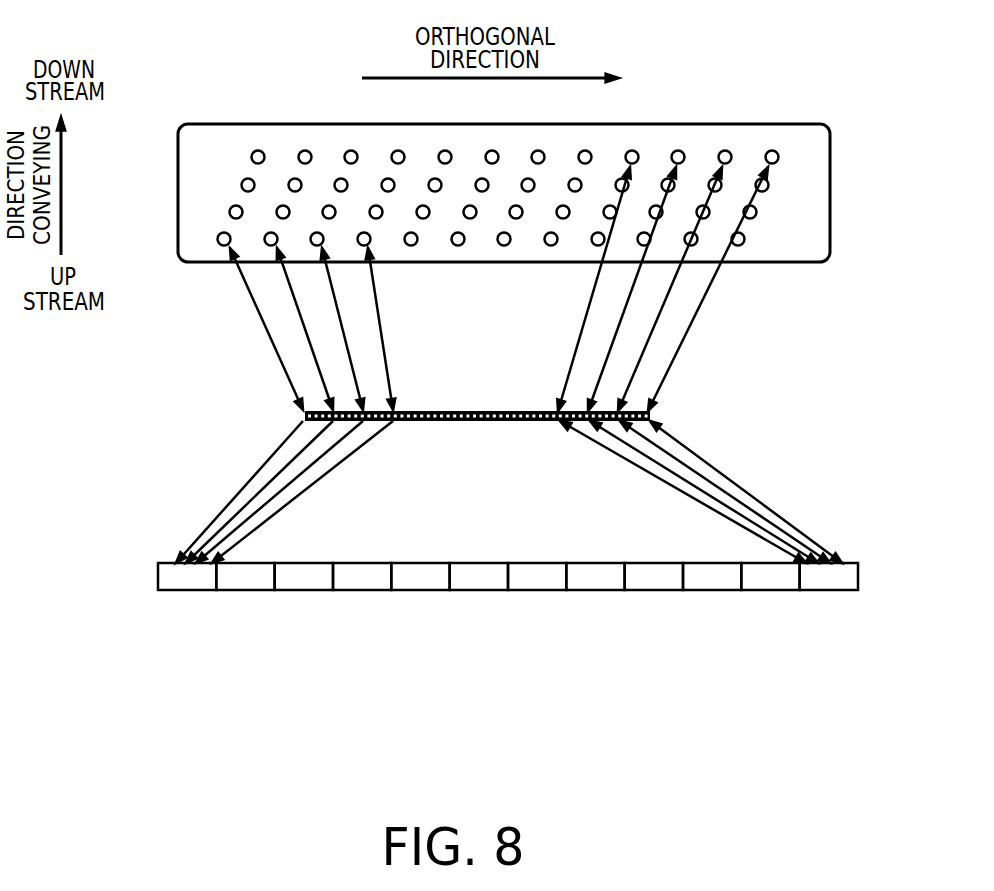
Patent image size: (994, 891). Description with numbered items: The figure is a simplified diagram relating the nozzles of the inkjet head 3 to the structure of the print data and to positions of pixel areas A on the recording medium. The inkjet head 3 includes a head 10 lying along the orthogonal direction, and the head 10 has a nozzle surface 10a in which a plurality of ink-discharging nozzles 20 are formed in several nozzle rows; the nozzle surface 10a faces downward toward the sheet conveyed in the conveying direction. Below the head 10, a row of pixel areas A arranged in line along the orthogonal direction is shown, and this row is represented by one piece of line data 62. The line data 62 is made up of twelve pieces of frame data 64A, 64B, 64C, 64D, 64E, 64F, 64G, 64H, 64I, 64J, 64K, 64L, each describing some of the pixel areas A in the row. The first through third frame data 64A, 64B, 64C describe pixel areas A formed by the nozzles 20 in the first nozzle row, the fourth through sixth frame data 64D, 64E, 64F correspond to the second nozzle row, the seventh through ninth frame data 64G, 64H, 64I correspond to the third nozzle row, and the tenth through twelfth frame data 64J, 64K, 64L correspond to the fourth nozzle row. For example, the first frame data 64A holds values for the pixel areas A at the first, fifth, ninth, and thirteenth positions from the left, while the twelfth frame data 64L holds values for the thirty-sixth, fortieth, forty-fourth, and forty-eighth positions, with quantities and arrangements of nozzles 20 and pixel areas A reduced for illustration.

The inkjet head 3 is at (178, 113).
The head 10 is at (642, 124).
The nozzle surface 10a is at (690, 135).
The nozzles 20 is at (740, 150).
The pixel areas A is at (305, 416).
The line data 62 is at (158, 575).
The first frame data 64A is at (175, 590).
The second frame data 64B is at (233, 590).
The third frame data 64C is at (292, 590).
The fourth frame data 64D is at (350, 590).
The fifth frame data 64E is at (408, 590).
The sixth frame data 64F is at (467, 590).
The seventh frame data 64G is at (525, 590).
The eighth frame data 64H is at (583, 590).
The ninth frame data 64I is at (642, 590).
The tenth frame data 64J is at (700, 590).
The eleventh frame data 64K is at (758, 590).
The twelfth frame data 64L is at (817, 590).